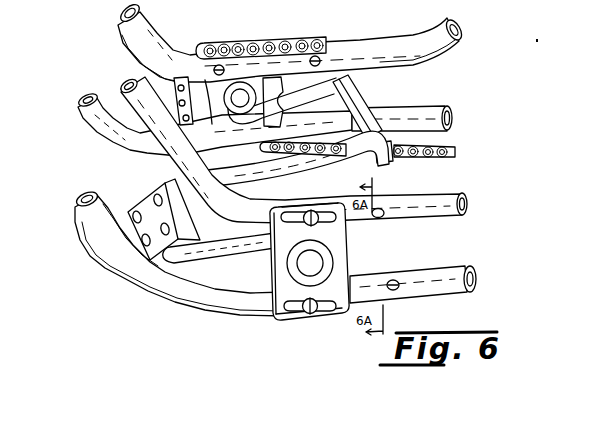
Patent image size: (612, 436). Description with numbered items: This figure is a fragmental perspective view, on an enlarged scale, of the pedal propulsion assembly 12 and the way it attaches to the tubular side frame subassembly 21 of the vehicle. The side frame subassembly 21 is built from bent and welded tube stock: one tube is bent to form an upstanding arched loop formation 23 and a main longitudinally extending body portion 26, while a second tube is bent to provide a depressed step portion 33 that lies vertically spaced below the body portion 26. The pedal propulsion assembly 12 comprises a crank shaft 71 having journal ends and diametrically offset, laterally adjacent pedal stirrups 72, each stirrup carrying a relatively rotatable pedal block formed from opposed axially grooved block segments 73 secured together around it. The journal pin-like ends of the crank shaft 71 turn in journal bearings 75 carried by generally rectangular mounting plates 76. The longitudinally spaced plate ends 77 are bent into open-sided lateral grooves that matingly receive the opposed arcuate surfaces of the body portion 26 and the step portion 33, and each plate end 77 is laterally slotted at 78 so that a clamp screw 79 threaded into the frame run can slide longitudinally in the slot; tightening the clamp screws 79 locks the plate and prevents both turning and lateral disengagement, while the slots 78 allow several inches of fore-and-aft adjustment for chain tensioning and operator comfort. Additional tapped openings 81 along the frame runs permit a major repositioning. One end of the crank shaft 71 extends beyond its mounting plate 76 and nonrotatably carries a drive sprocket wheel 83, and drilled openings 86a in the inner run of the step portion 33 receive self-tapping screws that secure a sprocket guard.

The pedal propulsion assembly 12 is at (213, 274).
The side frame subassembly 21 is at (428, 38).
The upstanding arched loop formation 23 is at (101, 128).
The main longitudinally extending body portion 26 is at (406, 108).
The depressed step portion 33 is at (366, 60).
The crank shaft 71 is at (327, 166).
The pedal stirrup 72 is at (160, 280).
The block segment 73 is at (390, 162).
The journal bearing 75 is at (187, 136).
The mounting plate 76 is at (262, 78).
The grooved plate end 77 is at (297, 201).
The slot 78 is at (334, 222).
The clamp screw 79 is at (272, 277).
The tapped opening 81 is at (381, 219).
The drive sprocket wheel 83 is at (196, 76).
The drilled opening 86a is at (238, 44).